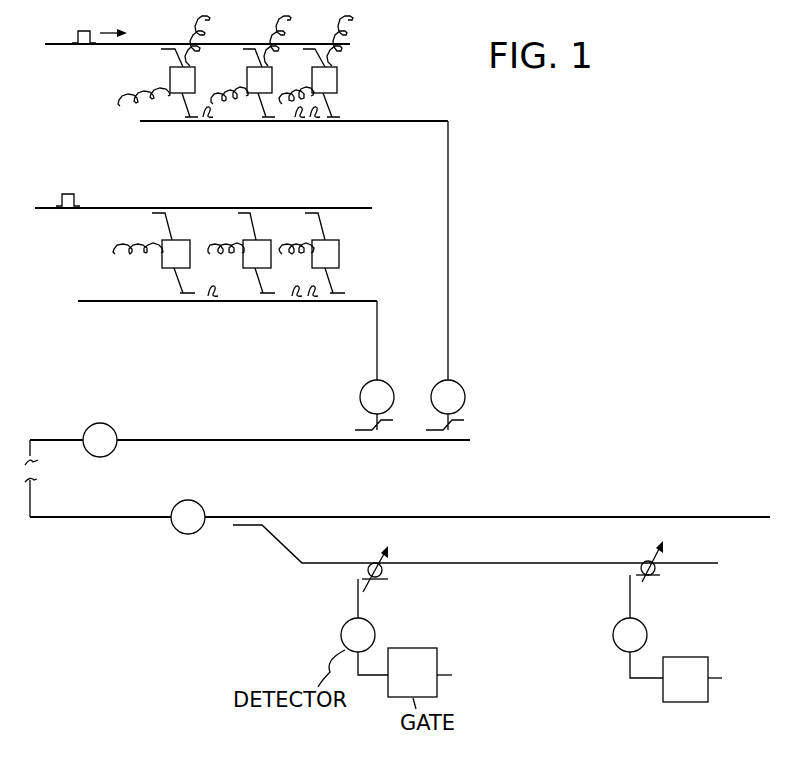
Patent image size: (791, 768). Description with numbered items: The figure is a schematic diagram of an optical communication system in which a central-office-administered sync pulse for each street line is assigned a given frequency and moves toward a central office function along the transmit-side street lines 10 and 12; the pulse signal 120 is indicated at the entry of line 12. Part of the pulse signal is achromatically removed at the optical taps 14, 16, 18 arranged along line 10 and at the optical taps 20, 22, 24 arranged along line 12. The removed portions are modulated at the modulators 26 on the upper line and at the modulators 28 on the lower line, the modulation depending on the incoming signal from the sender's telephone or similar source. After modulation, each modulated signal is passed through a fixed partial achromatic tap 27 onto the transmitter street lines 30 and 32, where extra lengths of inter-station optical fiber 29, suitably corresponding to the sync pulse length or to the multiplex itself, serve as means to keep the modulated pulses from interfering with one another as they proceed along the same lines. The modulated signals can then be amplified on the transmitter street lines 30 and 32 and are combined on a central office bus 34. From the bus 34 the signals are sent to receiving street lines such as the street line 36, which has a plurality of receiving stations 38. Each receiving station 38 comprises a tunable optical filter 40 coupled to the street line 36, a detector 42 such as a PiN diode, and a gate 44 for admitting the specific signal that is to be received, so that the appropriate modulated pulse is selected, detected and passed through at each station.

The transmit-side street line 10 is at (70, 50).
The transmit-side street line 12 is at (48, 210).
The pulse signal 120 is at (104, 206).
The optical tap 14 is at (168, 43).
The optical tap 16 is at (250, 44).
The optical tap 18 is at (312, 44).
The optical tap 20 is at (162, 207).
The optical tap 22 is at (242, 207).
The optical tap 24 is at (310, 207).
The modulator 26 is at (170, 74).
The fixed partial achromatic tap 27 is at (189, 121).
The modulator 28 is at (190, 250).
The extra length of inter-station optical fiber 29 is at (426, 406).
The transmitter street line 30 is at (448, 262).
The transmitter street line 32 is at (377, 328).
The central office bus 34 is at (194, 440).
The street line 36 is at (467, 565).
The receiving station 38 is at (326, 622).
The tunable optical filter 40 is at (366, 570).
The detector 42 is at (340, 635).
The gate 44 is at (428, 648).